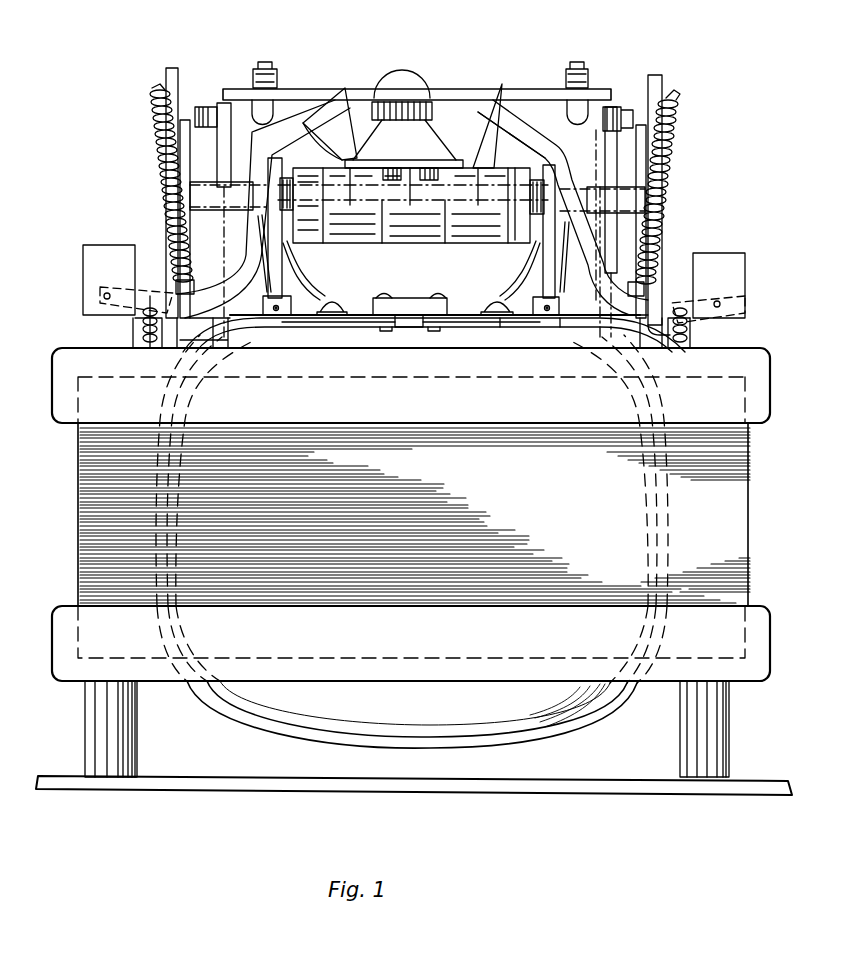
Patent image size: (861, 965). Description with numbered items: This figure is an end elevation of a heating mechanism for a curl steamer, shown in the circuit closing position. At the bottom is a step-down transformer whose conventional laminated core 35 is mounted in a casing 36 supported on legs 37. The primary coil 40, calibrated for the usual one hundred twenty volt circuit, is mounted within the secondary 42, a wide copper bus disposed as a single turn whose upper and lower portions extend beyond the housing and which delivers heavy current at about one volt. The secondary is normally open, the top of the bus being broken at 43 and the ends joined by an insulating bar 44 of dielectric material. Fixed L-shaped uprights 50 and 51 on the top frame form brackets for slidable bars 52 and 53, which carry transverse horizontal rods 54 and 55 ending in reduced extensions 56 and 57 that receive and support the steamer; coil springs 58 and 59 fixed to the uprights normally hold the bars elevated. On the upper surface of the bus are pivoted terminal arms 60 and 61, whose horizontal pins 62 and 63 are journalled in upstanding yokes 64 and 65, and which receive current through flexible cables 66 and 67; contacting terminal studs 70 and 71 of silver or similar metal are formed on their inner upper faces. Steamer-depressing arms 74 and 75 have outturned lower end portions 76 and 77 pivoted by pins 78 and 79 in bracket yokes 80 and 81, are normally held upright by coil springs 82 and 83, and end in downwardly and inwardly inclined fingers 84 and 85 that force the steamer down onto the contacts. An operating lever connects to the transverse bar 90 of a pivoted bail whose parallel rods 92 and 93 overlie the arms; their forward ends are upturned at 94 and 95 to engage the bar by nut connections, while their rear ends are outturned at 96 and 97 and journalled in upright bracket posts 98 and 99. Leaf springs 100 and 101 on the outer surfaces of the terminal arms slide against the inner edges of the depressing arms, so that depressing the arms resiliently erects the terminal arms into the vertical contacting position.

The laminated core 35 is at (80, 548).
The casing 36 is at (62, 420).
The legs 37 is at (137, 740).
The primary coil 40 is at (470, 705).
The secondary 42 is at (330, 735).
The break 43 is at (420, 330).
The insulating bar 44 is at (415, 300).
The L-shaped upright 50 is at (645, 175).
The L-shaped upright 51 is at (166, 245).
The slidable bar 52 is at (670, 132).
The slidable bar 53 is at (183, 140).
The transverse horizontal rod 54 is at (598, 200).
The transverse horizontal rod 55 is at (205, 193).
The reduced horizontal extension 56 is at (488, 195).
The reduced horizontal extension 57 is at (353, 158).
The coil spring 58 is at (672, 92).
The coil spring 59 is at (152, 105).
The terminal arm 60 is at (540, 258).
The terminal arm 61 is at (263, 208).
The horizontal pin 62 is at (549, 314).
The horizontal pin 63 is at (286, 325).
The upstanding yoke 64 is at (553, 312).
The upstanding yoke 65 is at (295, 312).
The flexible cable 66 is at (537, 318).
The flexible cable 67 is at (318, 299).
The contacting terminal stud 70 is at (490, 190).
The contacting terminal stud 71 is at (288, 178).
The steamer-depressing arm 74 is at (540, 122).
The steamer-depressing arm 75 is at (283, 125).
The lower end portion 76 is at (672, 305).
The lower end portion 77 is at (143, 308).
The pin 78 is at (722, 303).
The pin 79 is at (100, 294).
The upright bracket yoke 80 is at (700, 265).
The upright bracket yoke 81 is at (88, 253).
The coil spring 82 is at (690, 335).
The coil spring 83 is at (147, 335).
The finger 84 is at (487, 130).
The finger 85 is at (330, 130).
The transverse bar 90 is at (392, 94).
The fore-and-aft rod 92 is at (584, 118).
The fore-and-aft rod 93 is at (265, 107).
The upturned end 94 is at (576, 106).
The upturned end 95 is at (250, 78).
The outturned end portion 96 is at (606, 138).
The outturned end portion 97 is at (240, 118).
The upright bracket post 98 is at (612, 233).
The upright bracket post 99 is at (222, 253).
The leaf spring 100 is at (560, 262).
The leaf spring 101 is at (262, 292).